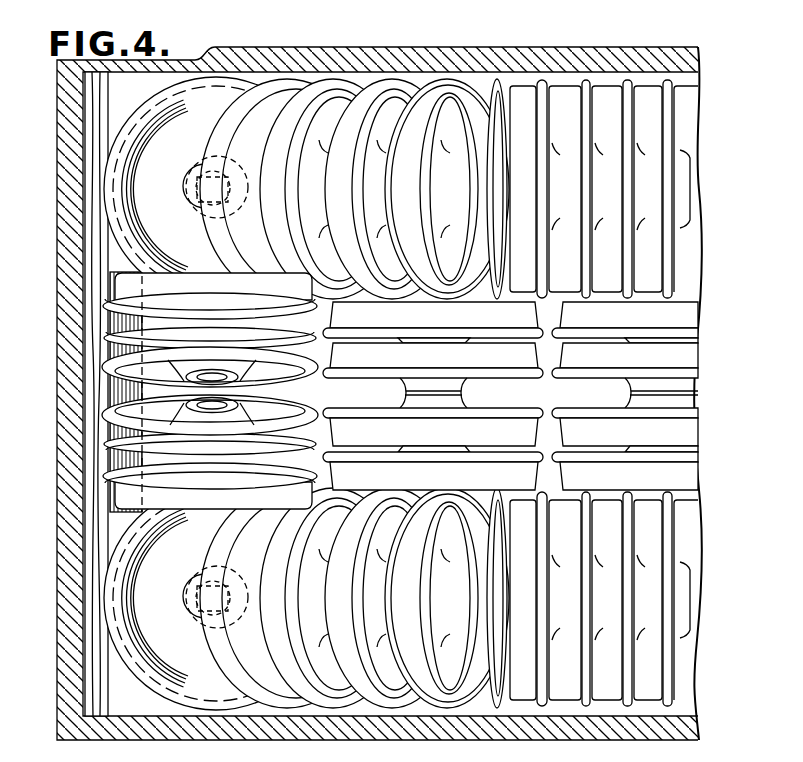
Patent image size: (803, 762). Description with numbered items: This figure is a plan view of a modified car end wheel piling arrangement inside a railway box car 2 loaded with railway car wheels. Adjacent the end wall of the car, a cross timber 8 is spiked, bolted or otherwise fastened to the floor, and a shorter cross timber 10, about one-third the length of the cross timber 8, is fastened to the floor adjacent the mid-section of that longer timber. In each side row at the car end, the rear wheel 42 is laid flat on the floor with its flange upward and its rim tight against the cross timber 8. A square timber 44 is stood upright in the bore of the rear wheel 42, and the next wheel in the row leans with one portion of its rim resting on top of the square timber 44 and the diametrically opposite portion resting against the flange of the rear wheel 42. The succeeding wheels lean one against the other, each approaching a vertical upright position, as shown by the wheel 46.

The railway box car 2 is at (410, 56).
The cross timber 8 is at (96, 262).
The shorter cross timber 10 is at (118, 390).
The rear wheel 42 is at (170, 193).
The square timber 44 is at (206, 207).
The wheel 46 is at (529, 92).